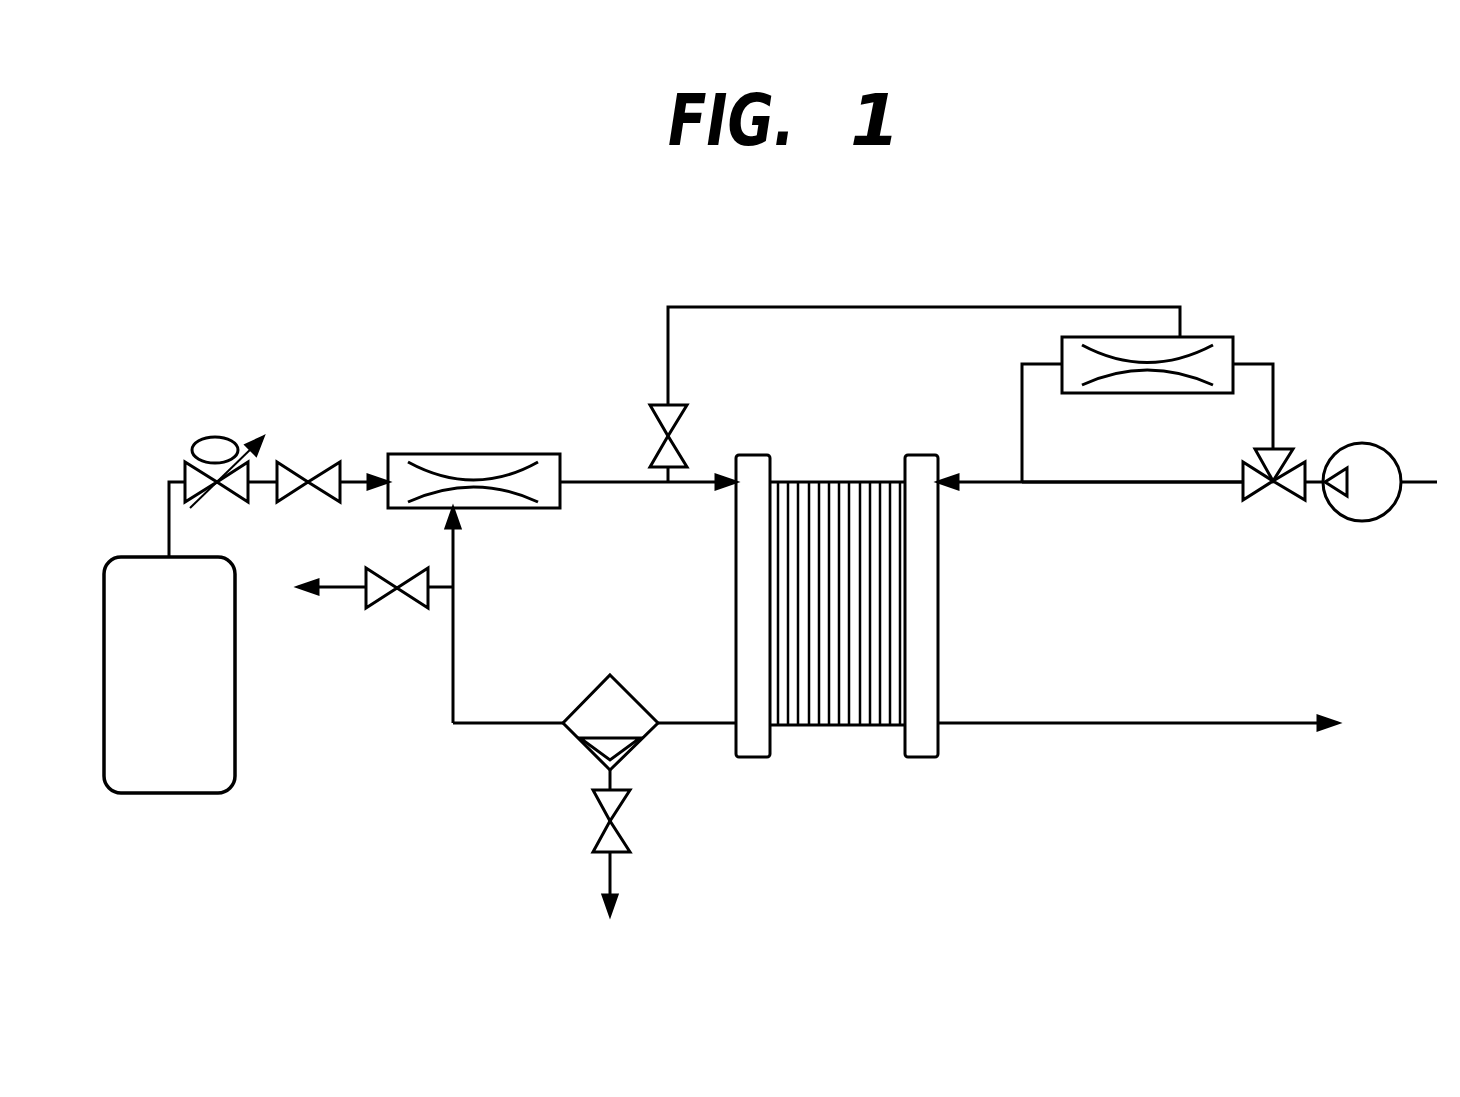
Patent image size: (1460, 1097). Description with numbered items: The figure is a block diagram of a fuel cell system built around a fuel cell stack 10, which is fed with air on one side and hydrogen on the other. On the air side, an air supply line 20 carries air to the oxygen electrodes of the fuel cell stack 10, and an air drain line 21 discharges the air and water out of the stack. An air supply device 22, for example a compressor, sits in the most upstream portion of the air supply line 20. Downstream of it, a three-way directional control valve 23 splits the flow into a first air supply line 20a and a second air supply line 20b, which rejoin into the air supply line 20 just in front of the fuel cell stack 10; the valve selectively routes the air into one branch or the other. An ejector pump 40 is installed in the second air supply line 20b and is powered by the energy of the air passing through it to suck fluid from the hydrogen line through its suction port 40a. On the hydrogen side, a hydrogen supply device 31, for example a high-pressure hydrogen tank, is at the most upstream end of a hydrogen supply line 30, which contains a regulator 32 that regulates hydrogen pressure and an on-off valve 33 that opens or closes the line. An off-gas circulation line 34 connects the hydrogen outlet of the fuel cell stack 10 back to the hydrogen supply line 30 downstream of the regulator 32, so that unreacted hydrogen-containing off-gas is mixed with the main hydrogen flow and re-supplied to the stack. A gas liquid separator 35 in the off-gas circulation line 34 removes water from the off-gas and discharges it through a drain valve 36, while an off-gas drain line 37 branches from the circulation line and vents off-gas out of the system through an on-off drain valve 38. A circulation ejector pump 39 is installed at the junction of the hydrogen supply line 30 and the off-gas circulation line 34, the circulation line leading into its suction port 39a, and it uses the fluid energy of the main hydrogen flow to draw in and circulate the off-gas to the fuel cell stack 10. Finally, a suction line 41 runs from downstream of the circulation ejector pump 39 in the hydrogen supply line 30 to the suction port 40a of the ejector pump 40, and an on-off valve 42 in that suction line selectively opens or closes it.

The fuel cell stack 10 is at (820, 712).
The air supply line 20 is at (980, 482).
The first air supply line 20a is at (1128, 482).
The second air supply line 20b is at (1022, 400).
The air drain line 21 is at (1093, 723).
The air supply device 22 is at (1362, 521).
The three-way directional control valve 23 is at (1275, 500).
The hydrogen supply line 30 is at (169, 527).
The hydrogen supply device 31 is at (178, 793).
The regulator 32 is at (210, 437).
The on-off valve 33 is at (310, 473).
The off-gas circulation line 34 is at (453, 657).
The gas liquid separator 35 is at (628, 690).
The drain valve 36 is at (615, 813).
The off-gas drain line 37 is at (340, 587).
The on-off drain valve 38 is at (397, 600).
The circulation ejector pump 39 is at (492, 454).
The suction port 39a is at (458, 512).
The ejector pump 40 is at (1223, 337).
The suction port 40a is at (1187, 337).
The suction line 41 is at (937, 307).
The on-off valve 42 is at (675, 432).